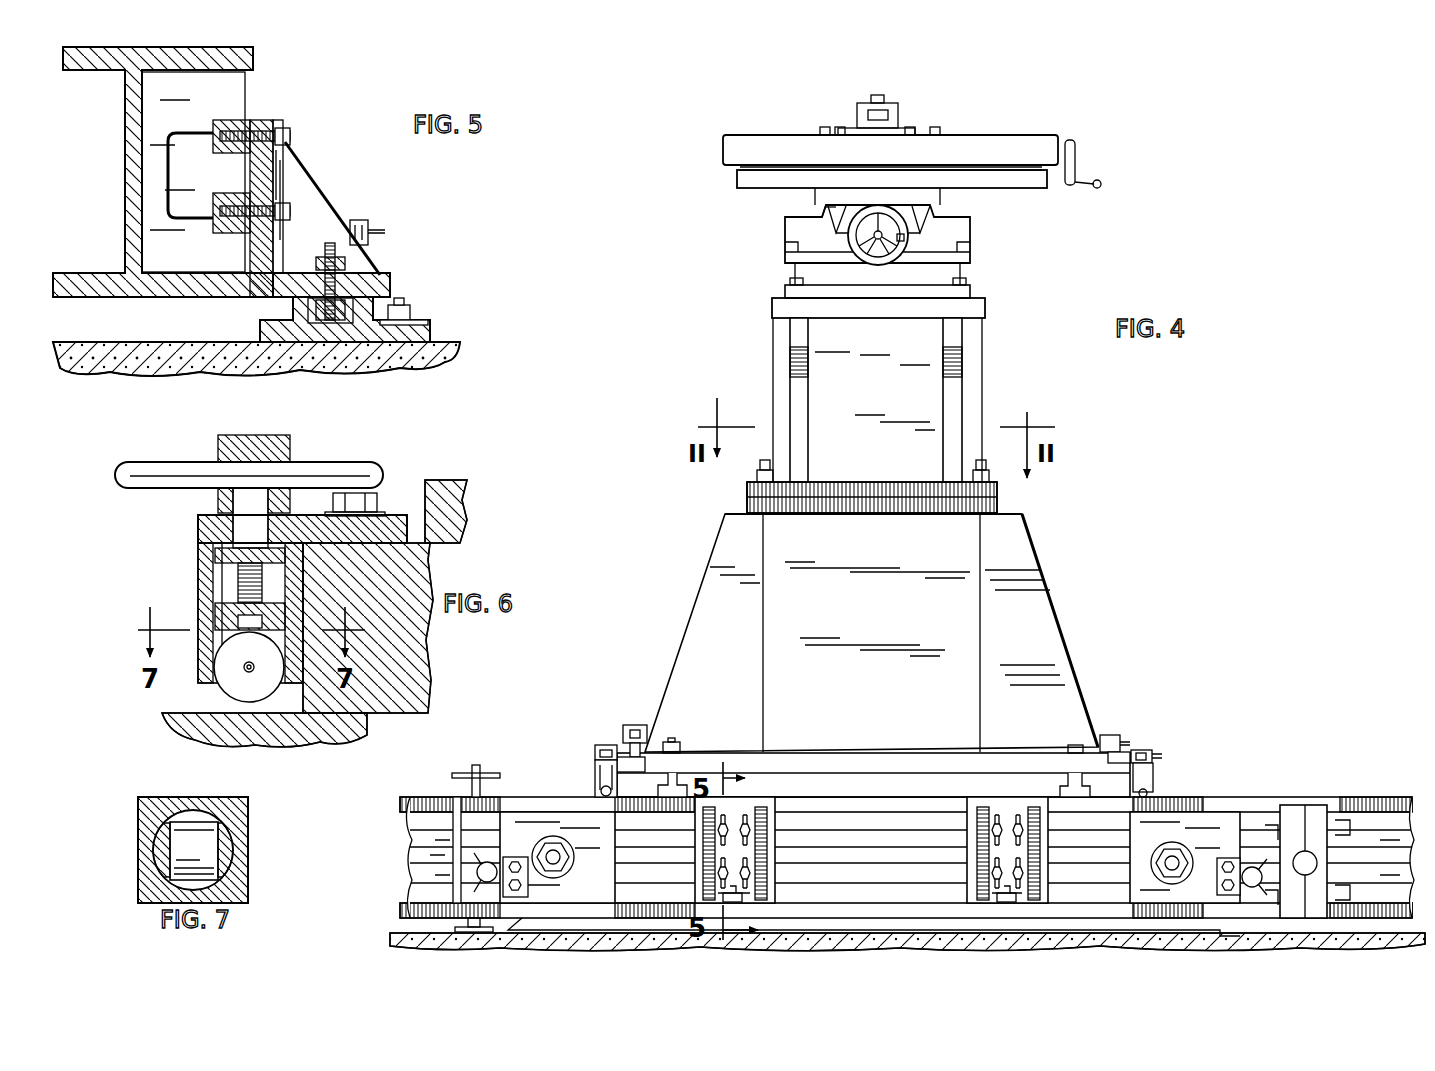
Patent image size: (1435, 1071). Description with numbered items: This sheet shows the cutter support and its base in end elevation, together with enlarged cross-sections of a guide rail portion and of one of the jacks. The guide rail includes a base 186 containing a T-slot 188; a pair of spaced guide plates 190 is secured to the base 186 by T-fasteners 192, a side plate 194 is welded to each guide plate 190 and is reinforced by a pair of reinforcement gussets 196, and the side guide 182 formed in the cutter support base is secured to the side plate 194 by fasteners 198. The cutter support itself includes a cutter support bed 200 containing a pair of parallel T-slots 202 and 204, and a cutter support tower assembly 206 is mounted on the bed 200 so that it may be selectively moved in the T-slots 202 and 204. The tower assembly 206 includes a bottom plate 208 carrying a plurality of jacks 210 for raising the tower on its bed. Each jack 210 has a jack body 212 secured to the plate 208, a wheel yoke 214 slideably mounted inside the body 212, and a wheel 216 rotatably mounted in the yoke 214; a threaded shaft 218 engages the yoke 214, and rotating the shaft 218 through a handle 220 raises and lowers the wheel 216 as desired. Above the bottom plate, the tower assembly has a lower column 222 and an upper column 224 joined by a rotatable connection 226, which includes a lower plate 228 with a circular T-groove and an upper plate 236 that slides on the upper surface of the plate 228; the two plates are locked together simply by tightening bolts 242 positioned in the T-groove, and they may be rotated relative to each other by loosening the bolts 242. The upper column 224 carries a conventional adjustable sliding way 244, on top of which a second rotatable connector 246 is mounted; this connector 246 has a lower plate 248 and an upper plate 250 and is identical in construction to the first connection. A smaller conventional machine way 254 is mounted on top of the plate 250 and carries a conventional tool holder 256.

In FIG. 5, the side guide 182 is at (237, 93).
In FIG. 5, the base 186 is at (433, 338).
In FIG. 5, the T-slot 188 is at (308, 314).
In FIG. 5, the guide plates 190 is at (385, 272).
In FIG. 4, the guide plates 190 is at (750, 908).
In FIG. 5, the T-fasteners 192 is at (318, 240).
In FIG. 4, the T-fasteners 192 is at (725, 818).
In FIG. 5, the side plate 194 is at (285, 140).
In FIG. 4, the side plate 194 is at (742, 815).
In FIG. 5, the reinforcement gussets 196 is at (300, 214).
In FIG. 4, the reinforcement gussets 196 is at (708, 826).
In FIG. 5, the fasteners 198 is at (312, 185).
In FIG. 4, the cutter support bed 200 is at (1125, 787).
In FIG. 4, the T-slot 202 is at (682, 782).
In FIG. 4, the T-slot 204 is at (1066, 781).
In FIG. 4, the cutter support tower assembly 206 is at (1029, 606).
In FIG. 4, the bottom plate 208 is at (818, 758).
In FIG. 6, the jacks 210 is at (198, 537).
In FIG. 4, the jacks 210 is at (634, 724).
In FIG. 6, the jack body 212 is at (203, 580).
In FIG. 7, the jack body 212 is at (240, 892).
In FIG. 6, the wheel yoke 214 is at (278, 622).
In FIG. 7, the wheel yoke 214 is at (228, 852).
In FIG. 6, the wheel 216 is at (289, 705).
In FIG. 6, the threaded shaft 218 is at (260, 592).
In FIG. 6, the handle 220 is at (150, 472).
In FIG. 4, the lower column 222 is at (955, 560).
In FIG. 4, the upper column 224 is at (917, 390).
In FIG. 4, the rotatable connection 226 is at (762, 515).
In FIG. 4, the lower plate 228 is at (996, 508).
In FIG. 4, the upper plate 236 is at (747, 487).
In FIG. 4, the bolts 242 is at (769, 462).
In FIG. 4, the adjustable sliding way 244 is at (962, 237).
In FIG. 4, the second rotatable connector 246 is at (796, 200).
In FIG. 4, the lower plate 248 is at (804, 212).
In FIG. 4, the upper plate 250 is at (935, 205).
In FIG. 4, the machine way 254 is at (1098, 142).
In FIG. 4, the tool holder 256 is at (890, 97).